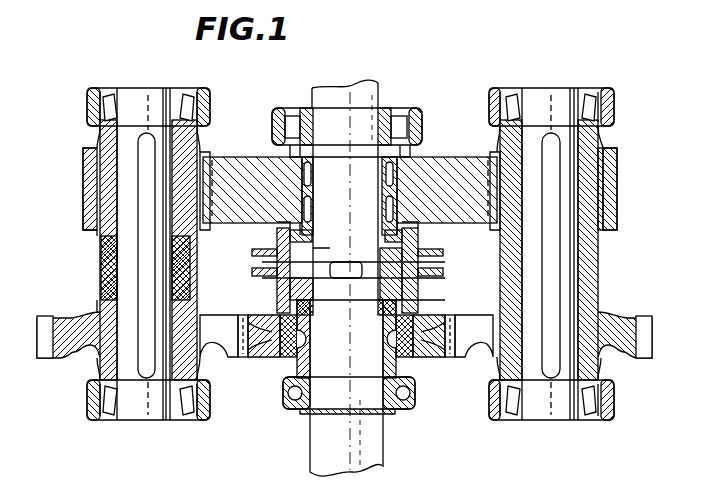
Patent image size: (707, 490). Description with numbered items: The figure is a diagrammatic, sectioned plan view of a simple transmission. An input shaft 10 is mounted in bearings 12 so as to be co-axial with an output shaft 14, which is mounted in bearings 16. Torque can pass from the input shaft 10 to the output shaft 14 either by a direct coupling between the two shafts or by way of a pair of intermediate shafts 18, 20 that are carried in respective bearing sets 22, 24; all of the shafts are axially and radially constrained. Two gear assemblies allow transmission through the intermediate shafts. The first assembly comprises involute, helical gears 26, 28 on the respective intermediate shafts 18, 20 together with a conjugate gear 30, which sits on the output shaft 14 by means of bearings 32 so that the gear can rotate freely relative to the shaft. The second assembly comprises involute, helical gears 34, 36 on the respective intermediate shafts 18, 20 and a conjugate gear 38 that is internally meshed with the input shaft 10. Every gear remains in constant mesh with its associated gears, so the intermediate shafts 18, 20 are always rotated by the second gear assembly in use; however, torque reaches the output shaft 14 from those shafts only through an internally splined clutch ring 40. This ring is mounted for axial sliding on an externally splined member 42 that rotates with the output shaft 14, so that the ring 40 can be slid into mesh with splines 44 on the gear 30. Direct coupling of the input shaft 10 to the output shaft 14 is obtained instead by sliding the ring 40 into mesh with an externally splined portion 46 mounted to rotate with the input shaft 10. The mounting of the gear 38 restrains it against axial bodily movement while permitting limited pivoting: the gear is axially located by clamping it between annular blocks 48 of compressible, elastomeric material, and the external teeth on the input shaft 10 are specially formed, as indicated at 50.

The input shaft 10 is at (372, 449).
The bearings 12 is at (410, 400).
The output shaft 14 is at (342, 96).
The bearings 16 is at (420, 110).
The intermediate shaft 18 is at (546, 104).
The intermediate shaft 20 is at (148, 105).
The bearing set 22 is at (617, 99).
The bearing set 24 is at (81, 97).
The involute helical gear 26 is at (612, 172).
The involute helical gear 28 is at (84, 196).
The conjugate gear 30 is at (240, 156).
The bearings 32 is at (398, 172).
The involute helical gear 34 is at (612, 324).
The involute helical gear 36 is at (62, 324).
The conjugate gear 38 is at (258, 350).
The internally splined clutch ring 40 is at (444, 272).
The externally splined member 42 is at (410, 266).
The splines 44 is at (277, 232).
The externally splined portion 46 is at (276, 294).
The annular blocks 48 is at (416, 354).
The external teeth 50 is at (297, 365).